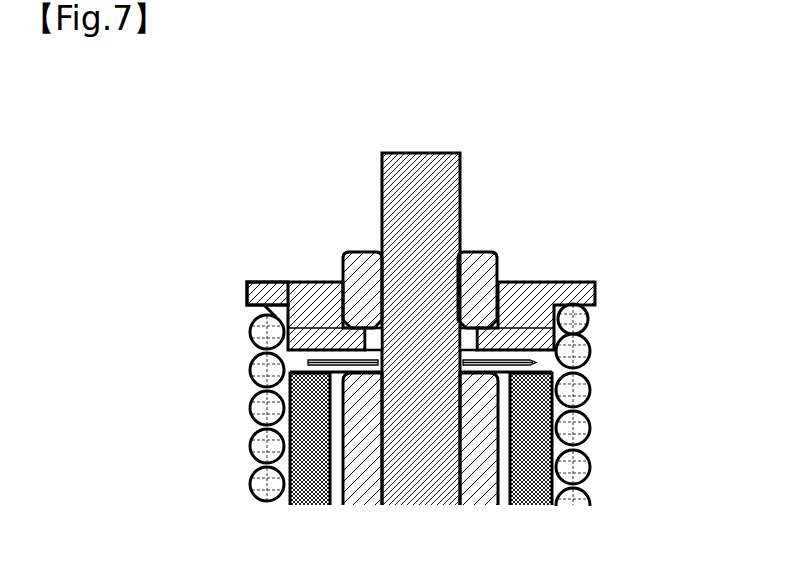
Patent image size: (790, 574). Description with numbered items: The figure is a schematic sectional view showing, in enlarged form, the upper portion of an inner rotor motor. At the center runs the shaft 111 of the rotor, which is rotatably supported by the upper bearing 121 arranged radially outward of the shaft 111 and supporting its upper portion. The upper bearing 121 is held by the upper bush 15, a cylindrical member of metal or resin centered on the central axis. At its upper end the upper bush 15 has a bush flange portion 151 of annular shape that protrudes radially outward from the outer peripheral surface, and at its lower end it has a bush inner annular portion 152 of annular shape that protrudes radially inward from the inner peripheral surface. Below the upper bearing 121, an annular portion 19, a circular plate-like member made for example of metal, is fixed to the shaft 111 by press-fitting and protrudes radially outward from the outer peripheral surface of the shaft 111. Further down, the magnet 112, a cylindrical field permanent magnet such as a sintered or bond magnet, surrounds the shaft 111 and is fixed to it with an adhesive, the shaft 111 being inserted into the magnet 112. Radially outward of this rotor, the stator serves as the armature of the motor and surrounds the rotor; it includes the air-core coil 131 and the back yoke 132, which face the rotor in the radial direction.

The shaft 111 is at (401, 198).
The upper bush 15 is at (303, 282).
The bush flange portion 151 is at (253, 282).
The upper bearing 121 is at (499, 263).
The annular portion 19 is at (535, 362).
The magnet 112 is at (367, 430).
The air-core coil 131 is at (538, 440).
The back yoke 132 is at (252, 452).
The bush inner annular portion 152 is at (250, 333).